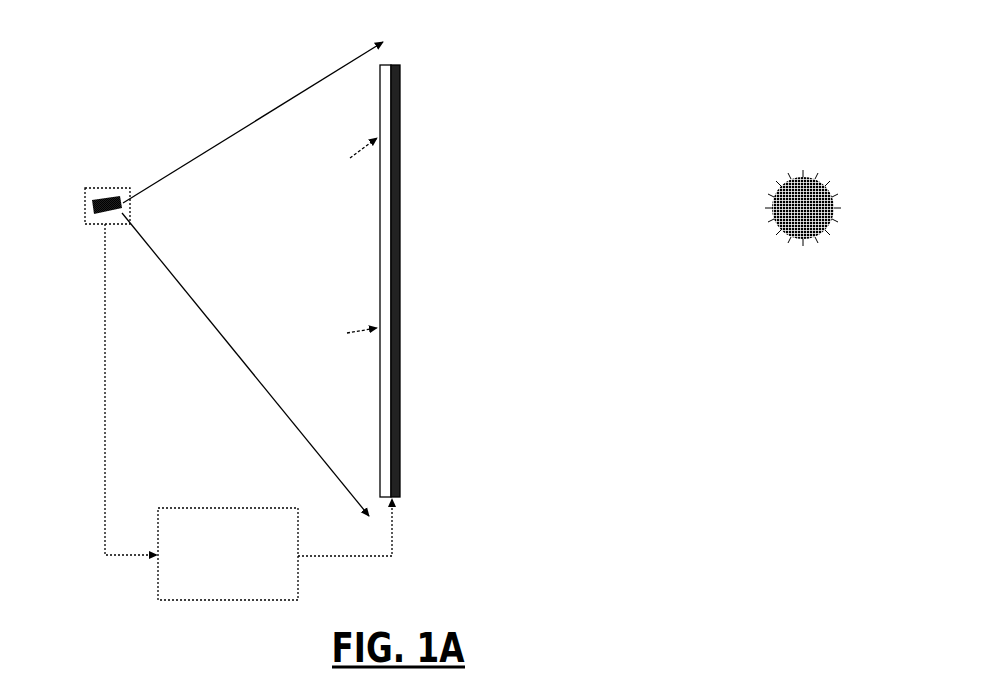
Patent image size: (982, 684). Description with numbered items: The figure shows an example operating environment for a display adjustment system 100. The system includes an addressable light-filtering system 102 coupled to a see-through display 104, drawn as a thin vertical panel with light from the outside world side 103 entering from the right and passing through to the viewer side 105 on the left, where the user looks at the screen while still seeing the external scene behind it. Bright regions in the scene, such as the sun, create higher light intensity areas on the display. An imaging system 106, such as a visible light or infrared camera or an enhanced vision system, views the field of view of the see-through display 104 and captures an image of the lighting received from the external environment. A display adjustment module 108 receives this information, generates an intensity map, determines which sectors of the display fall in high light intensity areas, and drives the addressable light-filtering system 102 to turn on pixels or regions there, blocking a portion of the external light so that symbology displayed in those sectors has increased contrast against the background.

The display adjustment system 100 is at (539, 64).
The addressable light-filtering system 102 is at (401, 438).
The outside world side 103 is at (418, 163).
The see-through display 104 is at (380, 416).
The viewer side 105 is at (368, 216).
The imaging system 106 is at (83, 204).
The display adjustment module 108 is at (228, 513).